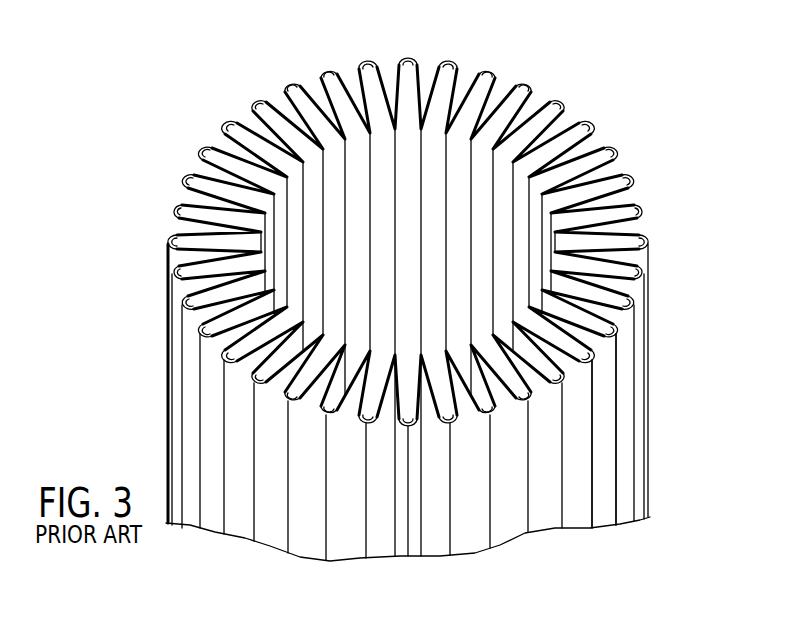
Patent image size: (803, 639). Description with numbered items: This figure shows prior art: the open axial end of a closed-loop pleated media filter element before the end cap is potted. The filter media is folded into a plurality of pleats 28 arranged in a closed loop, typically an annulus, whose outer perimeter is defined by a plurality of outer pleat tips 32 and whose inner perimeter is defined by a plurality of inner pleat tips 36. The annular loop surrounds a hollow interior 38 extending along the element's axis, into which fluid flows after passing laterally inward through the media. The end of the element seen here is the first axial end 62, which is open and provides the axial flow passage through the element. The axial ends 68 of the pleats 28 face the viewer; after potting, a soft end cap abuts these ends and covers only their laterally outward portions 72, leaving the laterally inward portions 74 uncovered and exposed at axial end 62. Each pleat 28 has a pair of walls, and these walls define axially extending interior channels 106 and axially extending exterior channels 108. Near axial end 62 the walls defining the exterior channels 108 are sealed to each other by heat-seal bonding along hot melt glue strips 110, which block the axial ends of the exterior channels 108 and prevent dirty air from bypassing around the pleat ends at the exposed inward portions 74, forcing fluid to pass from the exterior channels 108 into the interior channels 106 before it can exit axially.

The pleats 28 is at (487, 142).
The outer pleat tips 32 is at (290, 77).
The inner pleat tips 36 is at (279, 108).
The hollow interior 38 is at (356, 160).
The first axial end 62 is at (430, 58).
The axial ends of the pleats 68 is at (207, 197).
The laterally outward portions 72 is at (622, 178).
The laterally inward portions 74 is at (590, 173).
The interior channels 106 is at (583, 344).
The exterior channels 108 is at (577, 381).
The glue strips 110 is at (573, 120).